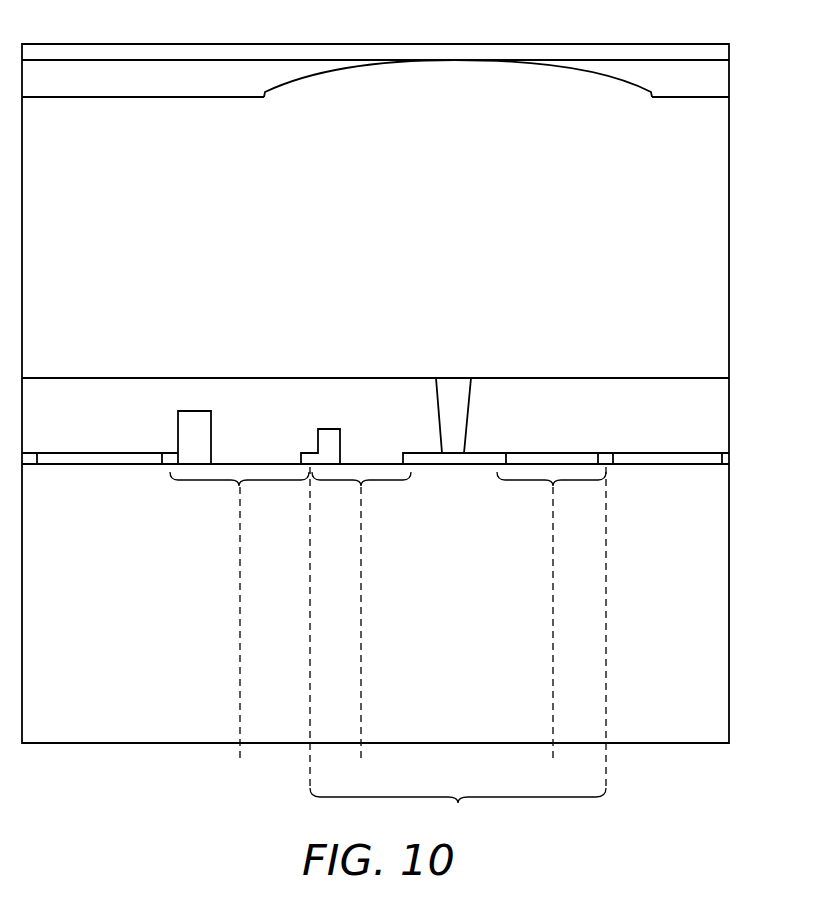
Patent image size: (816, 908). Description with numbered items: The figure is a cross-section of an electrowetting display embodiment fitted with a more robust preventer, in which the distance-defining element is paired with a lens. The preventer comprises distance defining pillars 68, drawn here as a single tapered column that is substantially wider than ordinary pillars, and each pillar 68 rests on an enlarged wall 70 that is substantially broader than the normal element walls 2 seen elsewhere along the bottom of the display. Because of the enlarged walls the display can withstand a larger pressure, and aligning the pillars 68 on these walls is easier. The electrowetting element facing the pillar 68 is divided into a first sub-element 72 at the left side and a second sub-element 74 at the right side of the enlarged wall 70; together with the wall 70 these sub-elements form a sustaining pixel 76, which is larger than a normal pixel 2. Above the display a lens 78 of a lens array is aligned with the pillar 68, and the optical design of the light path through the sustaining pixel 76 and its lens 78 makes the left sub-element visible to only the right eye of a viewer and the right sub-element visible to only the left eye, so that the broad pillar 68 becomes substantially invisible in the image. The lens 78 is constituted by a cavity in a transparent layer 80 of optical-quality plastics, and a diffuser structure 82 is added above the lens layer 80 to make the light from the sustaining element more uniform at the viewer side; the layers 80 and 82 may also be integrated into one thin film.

The normal element wall 2 is at (239, 627).
The distance defining pillar 68 is at (462, 411).
The enlarged wall 70 is at (431, 459).
The first sub-element 72 is at (360, 627).
The second sub-element 74 is at (551, 627).
The sustaining pixel 76 is at (458, 809).
The lens 78 is at (450, 77).
The transparent layer 80 is at (720, 80).
The diffuser structure 82 is at (720, 52).